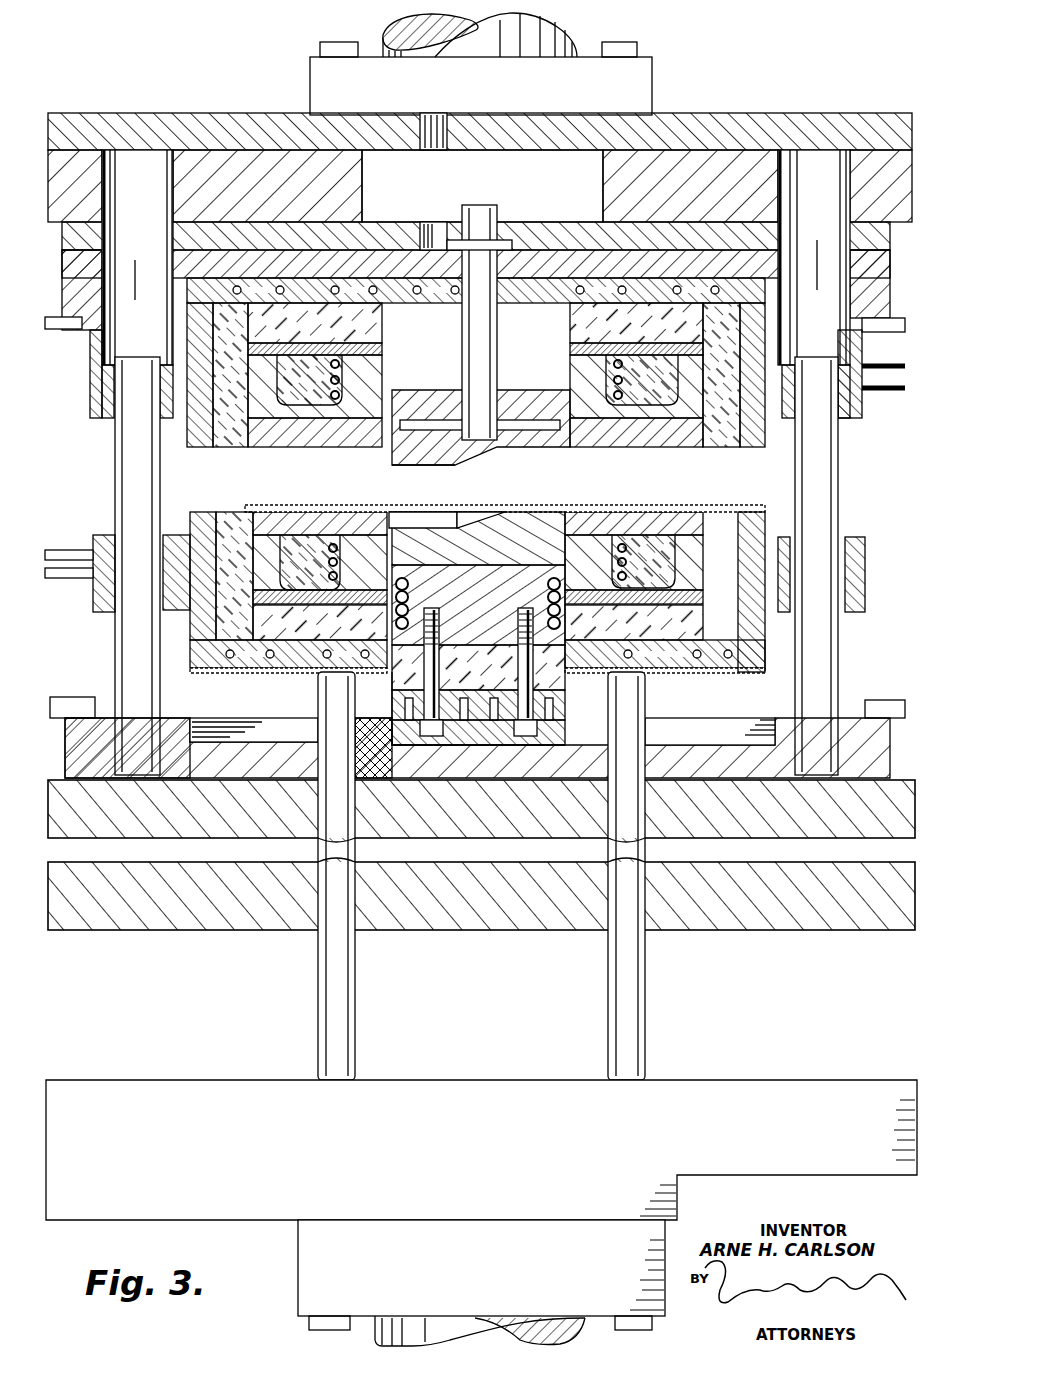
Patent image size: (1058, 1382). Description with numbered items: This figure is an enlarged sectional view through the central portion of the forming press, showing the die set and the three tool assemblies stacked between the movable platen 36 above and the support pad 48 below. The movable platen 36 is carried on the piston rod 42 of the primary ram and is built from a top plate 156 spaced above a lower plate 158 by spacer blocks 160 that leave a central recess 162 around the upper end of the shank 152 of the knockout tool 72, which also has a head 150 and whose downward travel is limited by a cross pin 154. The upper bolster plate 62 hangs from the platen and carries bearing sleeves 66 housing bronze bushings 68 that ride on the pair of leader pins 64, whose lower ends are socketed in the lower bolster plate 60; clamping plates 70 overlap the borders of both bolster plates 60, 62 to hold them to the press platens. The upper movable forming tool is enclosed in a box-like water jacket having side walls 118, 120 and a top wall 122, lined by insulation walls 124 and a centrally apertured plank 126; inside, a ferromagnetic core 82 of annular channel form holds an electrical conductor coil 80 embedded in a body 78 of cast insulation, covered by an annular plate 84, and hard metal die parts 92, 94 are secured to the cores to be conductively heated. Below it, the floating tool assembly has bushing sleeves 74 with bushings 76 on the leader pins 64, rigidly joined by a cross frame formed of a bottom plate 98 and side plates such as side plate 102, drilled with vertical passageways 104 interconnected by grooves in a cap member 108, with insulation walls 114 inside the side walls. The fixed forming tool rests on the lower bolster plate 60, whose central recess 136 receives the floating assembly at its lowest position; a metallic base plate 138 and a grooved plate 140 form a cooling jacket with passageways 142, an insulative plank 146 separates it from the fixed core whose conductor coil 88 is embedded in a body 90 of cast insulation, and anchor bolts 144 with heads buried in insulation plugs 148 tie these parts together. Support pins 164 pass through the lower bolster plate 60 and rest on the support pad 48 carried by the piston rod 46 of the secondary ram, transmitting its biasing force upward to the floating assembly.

The movable platen 36 is at (756, 112).
The piston rod 42 is at (578, 50).
The piston rod 46 is at (378, 1318).
The support pad 48 is at (186, 1084).
The lower bolster plate 60 is at (726, 746).
The upper bolster plate 62 is at (100, 340).
The leader pins 64 is at (118, 462).
The bearing sleeves 66 is at (90, 388).
The bushings 68 is at (104, 420).
The clamping plates 70 is at (80, 328).
The knockout tool 72 is at (502, 452).
The bushing sleeves 74 is at (93, 600).
The bushings 76 is at (93, 542).
The body of cast insulation 78 is at (290, 436).
The electrical conductor coil 80 is at (340, 395).
The ferromagnetic core 82 is at (330, 372).
The annular plate 84 is at (382, 350).
The conductor coil 88 is at (555, 650).
The body of cast insulative material 90 is at (392, 684).
The hard metal die part 92 is at (308, 440).
The hard metal die part 94 is at (324, 512).
The bottom plate 98 is at (662, 672).
The side plate 102 is at (766, 650).
The passageways 104 is at (178, 536).
The cap member 108 is at (202, 520).
The insulation wall 114 is at (232, 520).
The side wall 118 is at (194, 448).
The side wall 120 is at (762, 440).
The top wall 122 is at (582, 290).
The insulation wall 124 is at (236, 448).
The centrally apertured plank 126 is at (382, 330).
The central recess 136 is at (694, 732).
The metallic base plate 138 is at (565, 732).
The grooved plate 140 is at (392, 708).
The passageways 142 is at (392, 730).
The anchor bolts 144 is at (518, 632).
The insulative plank 146 is at (565, 710).
The insulation plugs 148 is at (510, 745).
The head 150 is at (420, 464).
The shank 152 is at (484, 206).
The cross pin 154 is at (508, 240).
The top plate 156 is at (204, 124).
The lower plate 158 is at (188, 236).
The spacer blocks 160 is at (262, 160).
The central recess 162 is at (445, 152).
The support pins 164 is at (350, 972).